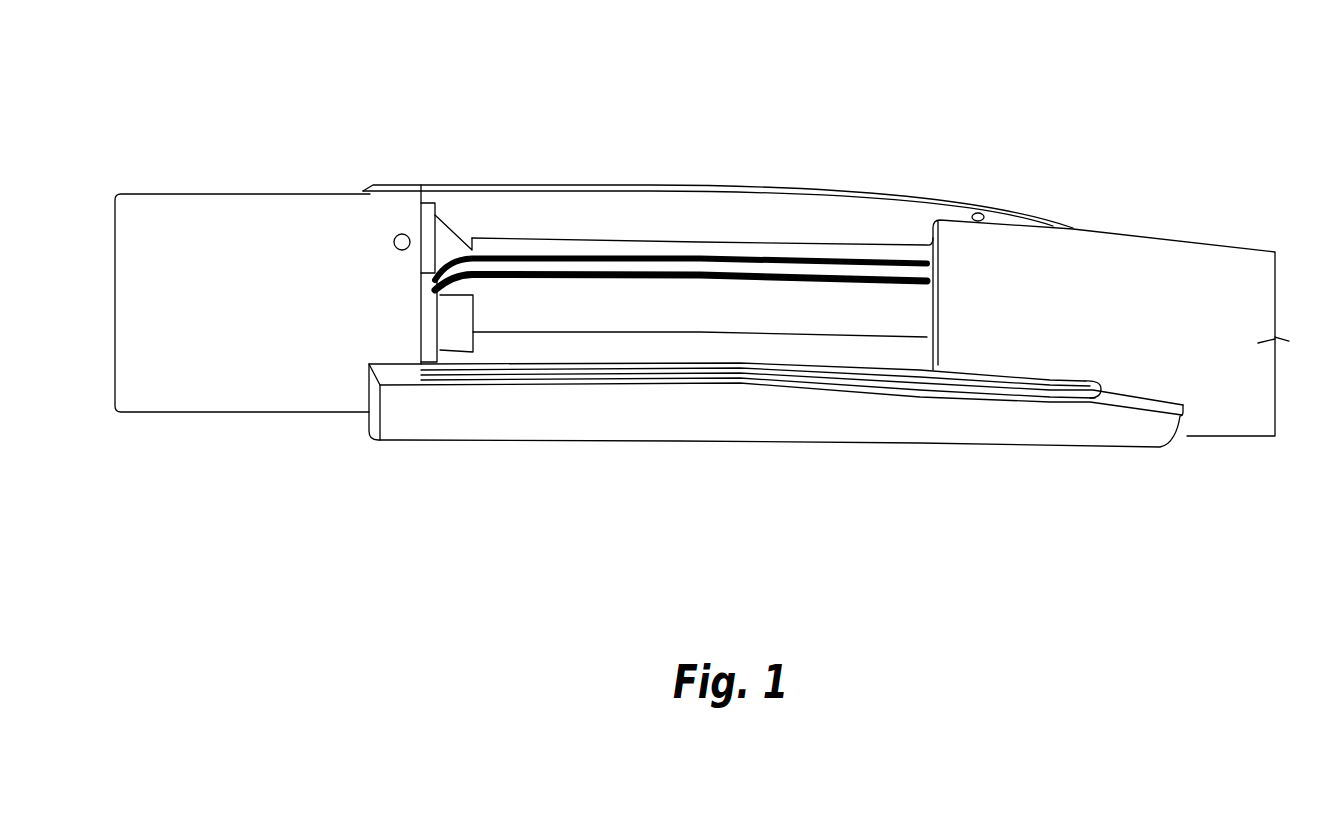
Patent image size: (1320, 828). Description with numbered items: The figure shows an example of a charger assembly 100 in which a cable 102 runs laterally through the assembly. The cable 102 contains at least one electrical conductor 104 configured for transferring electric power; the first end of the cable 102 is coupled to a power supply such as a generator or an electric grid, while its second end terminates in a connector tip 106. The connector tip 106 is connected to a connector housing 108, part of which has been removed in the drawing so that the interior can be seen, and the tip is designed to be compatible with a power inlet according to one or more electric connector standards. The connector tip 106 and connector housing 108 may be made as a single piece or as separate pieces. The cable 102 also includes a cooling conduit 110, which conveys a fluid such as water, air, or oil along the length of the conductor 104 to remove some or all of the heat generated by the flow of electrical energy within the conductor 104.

The charger assembly 100 is at (1174, 83).
The cable 102 is at (1220, 413).
The electrical conductor 104 is at (640, 347).
The connector tip 106 is at (263, 194).
The connector housing 108 is at (425, 442).
The cooling conduit 110 is at (577, 250).